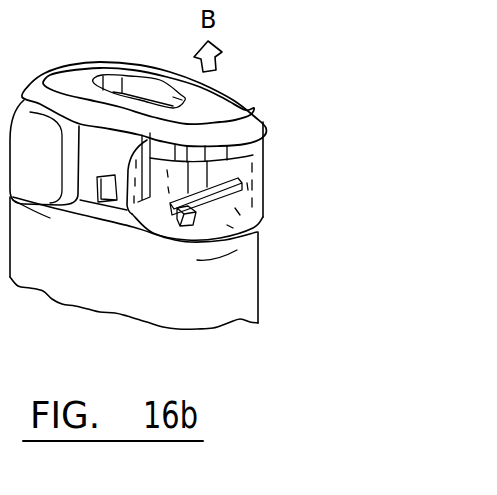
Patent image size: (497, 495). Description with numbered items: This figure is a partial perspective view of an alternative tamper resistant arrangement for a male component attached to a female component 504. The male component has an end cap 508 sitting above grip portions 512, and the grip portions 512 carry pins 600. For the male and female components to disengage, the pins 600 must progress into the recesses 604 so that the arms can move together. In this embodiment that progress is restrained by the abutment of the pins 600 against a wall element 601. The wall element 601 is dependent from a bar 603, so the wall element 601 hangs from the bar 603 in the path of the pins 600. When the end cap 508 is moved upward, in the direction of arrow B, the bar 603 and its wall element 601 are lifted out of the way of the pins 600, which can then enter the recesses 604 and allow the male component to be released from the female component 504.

The end cap 508 is at (233, 87).
The bar 603 is at (217, 172).
The grip portions 512 is at (260, 187).
The wall element 601 is at (220, 198).
The pins 600 is at (197, 220).
The recesses 604 is at (135, 223).
The female component 504 is at (223, 307).